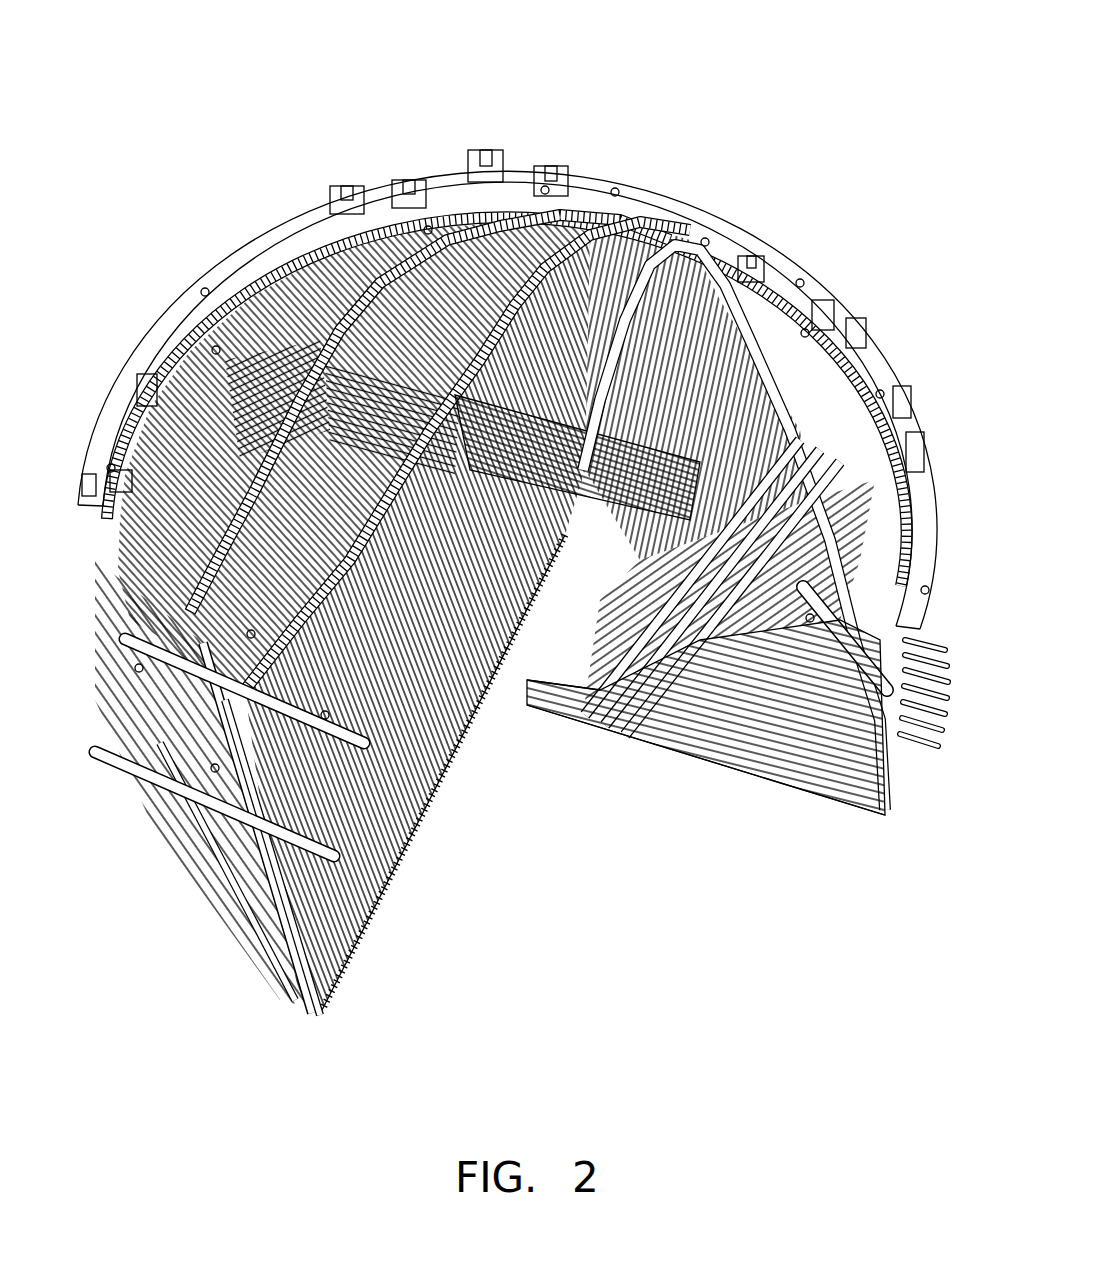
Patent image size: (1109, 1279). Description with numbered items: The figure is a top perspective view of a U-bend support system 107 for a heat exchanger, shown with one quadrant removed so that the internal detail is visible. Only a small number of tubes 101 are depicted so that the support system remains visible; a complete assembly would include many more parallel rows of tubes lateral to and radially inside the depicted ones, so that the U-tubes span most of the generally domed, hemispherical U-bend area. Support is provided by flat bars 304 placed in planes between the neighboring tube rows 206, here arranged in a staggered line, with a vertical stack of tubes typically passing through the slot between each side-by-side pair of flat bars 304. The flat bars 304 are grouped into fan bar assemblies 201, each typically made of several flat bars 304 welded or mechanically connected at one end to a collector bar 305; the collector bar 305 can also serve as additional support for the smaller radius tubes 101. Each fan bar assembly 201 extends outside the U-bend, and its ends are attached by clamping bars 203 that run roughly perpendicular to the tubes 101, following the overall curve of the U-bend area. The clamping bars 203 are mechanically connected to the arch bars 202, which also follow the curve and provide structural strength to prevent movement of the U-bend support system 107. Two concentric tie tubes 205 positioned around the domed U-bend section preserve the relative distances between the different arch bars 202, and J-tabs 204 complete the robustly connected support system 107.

The tubes 101 is at (250, 292).
The U-bend support system 107 is at (526, 946).
The fan bar assembly 201 is at (791, 790).
The arch bars 202 is at (504, 292).
The clamping bars 203 is at (362, 314).
The J-tabs 204 is at (512, 232).
The tie tubes 205 is at (806, 250).
The tube rows 206 is at (531, 402).
The flat bars 304 is at (642, 288).
The collector bar 305 is at (565, 712).